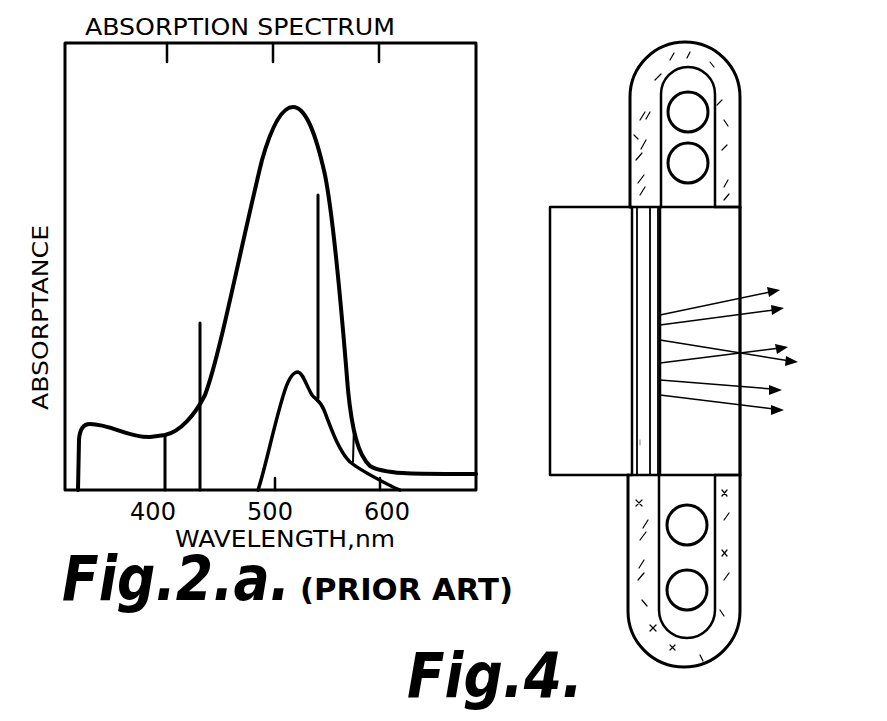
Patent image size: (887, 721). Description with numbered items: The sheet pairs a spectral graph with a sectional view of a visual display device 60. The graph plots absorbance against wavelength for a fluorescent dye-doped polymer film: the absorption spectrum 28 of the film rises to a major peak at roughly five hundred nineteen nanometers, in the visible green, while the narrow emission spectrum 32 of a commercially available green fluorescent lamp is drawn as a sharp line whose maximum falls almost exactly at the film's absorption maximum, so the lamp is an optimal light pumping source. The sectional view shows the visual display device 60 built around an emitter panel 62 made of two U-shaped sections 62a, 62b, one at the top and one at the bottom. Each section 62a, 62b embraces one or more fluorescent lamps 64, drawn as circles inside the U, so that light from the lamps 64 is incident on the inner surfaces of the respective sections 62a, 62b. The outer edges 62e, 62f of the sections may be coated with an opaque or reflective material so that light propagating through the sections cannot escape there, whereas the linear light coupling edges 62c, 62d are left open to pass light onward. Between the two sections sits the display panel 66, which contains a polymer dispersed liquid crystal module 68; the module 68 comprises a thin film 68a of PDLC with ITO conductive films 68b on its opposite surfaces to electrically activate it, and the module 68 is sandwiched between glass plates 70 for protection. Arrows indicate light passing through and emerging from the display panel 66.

In FIG. 2a, the absorption spectrum 28 is at (318, 133).
In FIG. 2a, the emission spectrum 32 is at (323, 246).
In FIG. 4, the visual display device 60 is at (653, 362).
In FIG. 4, the emitter panel 62 is at (670, 362).
In FIG. 4, the U-shaped section 62a is at (713, 45).
In FIG. 4, the U-shaped section 62b is at (660, 657).
In FIG. 4, the linear light coupling edge 62c is at (636, 207).
In FIG. 4, the linear light coupling edge 62d is at (632, 470).
In FIG. 4, the edge 62e is at (725, 212).
In FIG. 4, the edge 62f is at (740, 474).
In FIG. 4, the fluorescent lamp 64 is at (705, 112).
In FIG. 4, the display panel 66 is at (797, 303).
In FIG. 4, the polymer dispersed liquid crystal module 68 is at (673, 430).
In FIG. 4, the thin film of PDLC 68a is at (641, 378).
In FIG. 4, the ITO conductive film 68b is at (632, 330).
In FIG. 4, the glass plate 70 is at (745, 250).